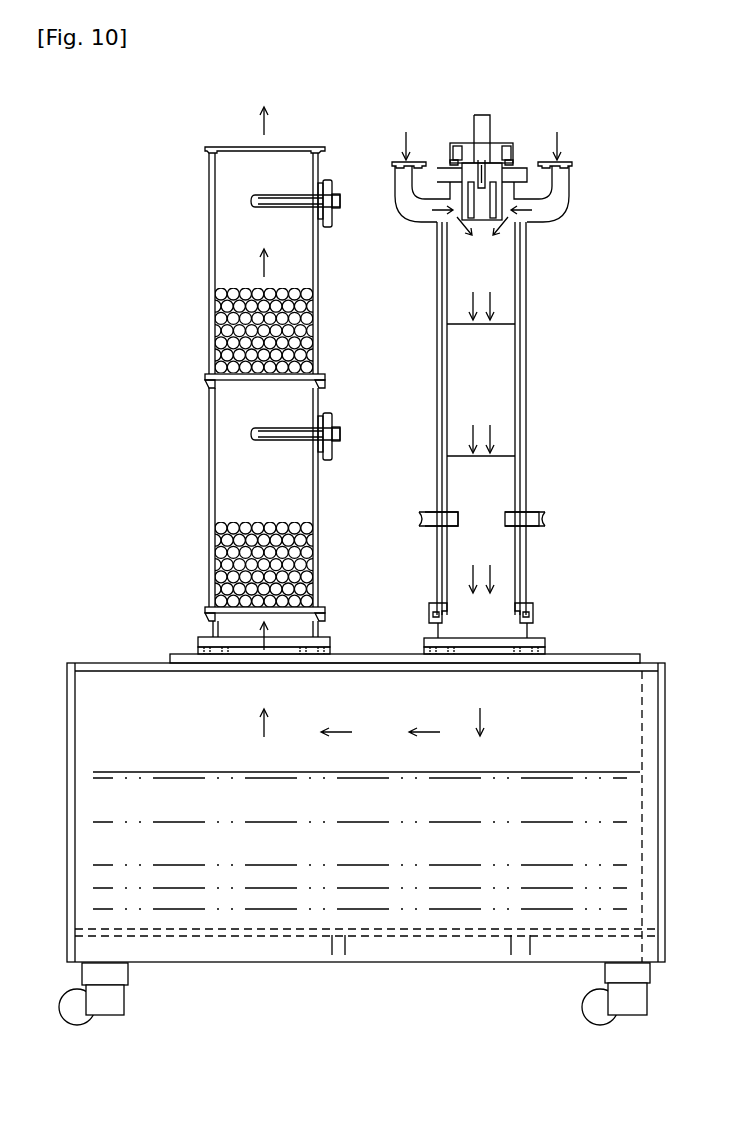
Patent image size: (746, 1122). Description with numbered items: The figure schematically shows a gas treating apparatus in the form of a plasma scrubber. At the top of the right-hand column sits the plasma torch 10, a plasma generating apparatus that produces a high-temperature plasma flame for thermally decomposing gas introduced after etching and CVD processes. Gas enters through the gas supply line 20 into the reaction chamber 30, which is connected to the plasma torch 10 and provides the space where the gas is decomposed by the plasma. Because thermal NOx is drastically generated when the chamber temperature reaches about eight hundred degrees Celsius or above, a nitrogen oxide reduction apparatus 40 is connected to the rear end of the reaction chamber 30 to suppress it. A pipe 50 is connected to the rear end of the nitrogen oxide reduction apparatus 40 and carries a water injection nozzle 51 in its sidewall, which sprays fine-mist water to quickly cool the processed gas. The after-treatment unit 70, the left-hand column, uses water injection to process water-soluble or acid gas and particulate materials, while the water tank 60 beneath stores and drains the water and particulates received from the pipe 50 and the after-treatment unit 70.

The plasma torch 10 is at (490, 124).
The gas supply line 20 is at (562, 163).
The reaction chamber 30 is at (518, 243).
The nitrogen oxide reduction apparatus 40 is at (540, 372).
The pipe 50 is at (540, 501).
The water injection nozzle 51 is at (553, 529).
The water tank 60 is at (608, 648).
The after-treatment unit 70 is at (196, 439).